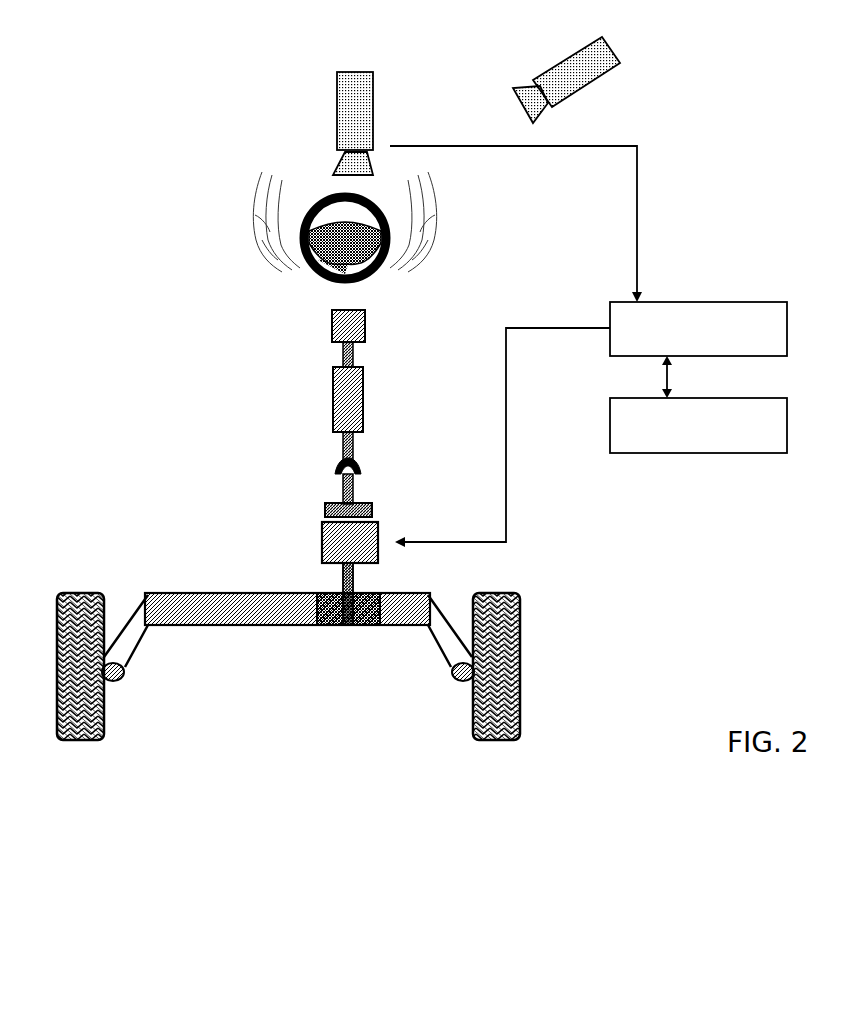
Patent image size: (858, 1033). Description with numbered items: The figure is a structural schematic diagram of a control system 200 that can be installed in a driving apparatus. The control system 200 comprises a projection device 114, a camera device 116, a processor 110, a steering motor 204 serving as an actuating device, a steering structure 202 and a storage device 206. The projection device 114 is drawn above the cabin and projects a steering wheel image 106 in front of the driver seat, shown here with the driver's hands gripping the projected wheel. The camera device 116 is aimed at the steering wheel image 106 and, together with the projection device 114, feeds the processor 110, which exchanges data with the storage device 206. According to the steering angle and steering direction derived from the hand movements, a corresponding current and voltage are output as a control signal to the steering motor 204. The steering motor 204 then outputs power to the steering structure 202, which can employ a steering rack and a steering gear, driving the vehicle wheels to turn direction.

The steering wheel image 106 is at (393, 228).
The processor 110 is at (772, 313).
The projection device 114 is at (375, 125).
The camera device 116 is at (617, 56).
The control system 200 is at (752, 596).
The steering structure 202 is at (433, 595).
The steering motor 204 is at (380, 532).
The storage device 206 is at (772, 415).